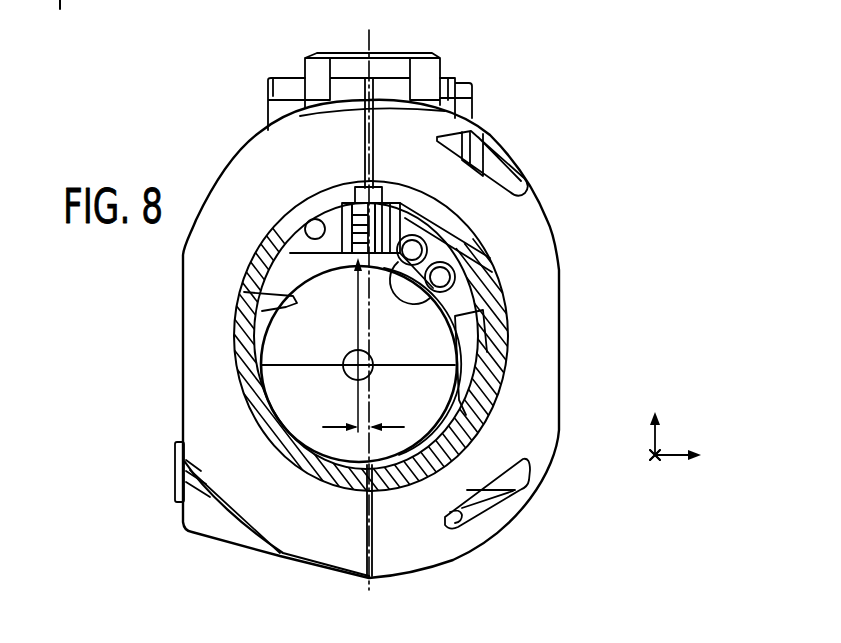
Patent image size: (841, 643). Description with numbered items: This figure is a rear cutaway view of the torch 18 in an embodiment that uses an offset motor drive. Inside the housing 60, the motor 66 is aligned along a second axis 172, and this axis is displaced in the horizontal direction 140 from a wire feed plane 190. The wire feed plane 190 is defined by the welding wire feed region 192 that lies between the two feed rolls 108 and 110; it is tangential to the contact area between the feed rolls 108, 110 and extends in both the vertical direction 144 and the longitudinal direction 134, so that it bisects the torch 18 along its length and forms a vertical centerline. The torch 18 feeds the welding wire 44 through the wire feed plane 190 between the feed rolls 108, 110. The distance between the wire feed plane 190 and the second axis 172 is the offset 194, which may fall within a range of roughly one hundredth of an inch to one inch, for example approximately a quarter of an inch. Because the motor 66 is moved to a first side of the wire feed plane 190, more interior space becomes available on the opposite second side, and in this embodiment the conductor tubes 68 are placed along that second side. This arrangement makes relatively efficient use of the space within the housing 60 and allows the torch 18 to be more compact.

The torch 18 is at (616, 263).
The welding wire 44 is at (342, 217).
The housing 60 is at (238, 323).
The motor 66 is at (293, 391).
The conductor tubes 68 is at (426, 241).
The feed roll 108 is at (391, 204).
The feed roll 110 is at (352, 204).
The longitudinal direction 134 is at (655, 456).
The horizontal direction 140 is at (660, 458).
The vertical direction 144 is at (657, 438).
The second axis 172 is at (357, 364).
The wire feed plane 190 is at (371, 313).
The welding wire feed region 192 is at (357, 297).
The offset 194 is at (393, 427).